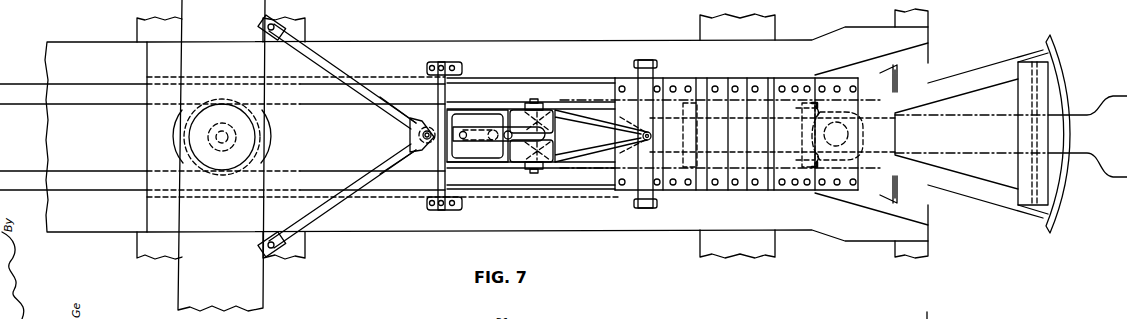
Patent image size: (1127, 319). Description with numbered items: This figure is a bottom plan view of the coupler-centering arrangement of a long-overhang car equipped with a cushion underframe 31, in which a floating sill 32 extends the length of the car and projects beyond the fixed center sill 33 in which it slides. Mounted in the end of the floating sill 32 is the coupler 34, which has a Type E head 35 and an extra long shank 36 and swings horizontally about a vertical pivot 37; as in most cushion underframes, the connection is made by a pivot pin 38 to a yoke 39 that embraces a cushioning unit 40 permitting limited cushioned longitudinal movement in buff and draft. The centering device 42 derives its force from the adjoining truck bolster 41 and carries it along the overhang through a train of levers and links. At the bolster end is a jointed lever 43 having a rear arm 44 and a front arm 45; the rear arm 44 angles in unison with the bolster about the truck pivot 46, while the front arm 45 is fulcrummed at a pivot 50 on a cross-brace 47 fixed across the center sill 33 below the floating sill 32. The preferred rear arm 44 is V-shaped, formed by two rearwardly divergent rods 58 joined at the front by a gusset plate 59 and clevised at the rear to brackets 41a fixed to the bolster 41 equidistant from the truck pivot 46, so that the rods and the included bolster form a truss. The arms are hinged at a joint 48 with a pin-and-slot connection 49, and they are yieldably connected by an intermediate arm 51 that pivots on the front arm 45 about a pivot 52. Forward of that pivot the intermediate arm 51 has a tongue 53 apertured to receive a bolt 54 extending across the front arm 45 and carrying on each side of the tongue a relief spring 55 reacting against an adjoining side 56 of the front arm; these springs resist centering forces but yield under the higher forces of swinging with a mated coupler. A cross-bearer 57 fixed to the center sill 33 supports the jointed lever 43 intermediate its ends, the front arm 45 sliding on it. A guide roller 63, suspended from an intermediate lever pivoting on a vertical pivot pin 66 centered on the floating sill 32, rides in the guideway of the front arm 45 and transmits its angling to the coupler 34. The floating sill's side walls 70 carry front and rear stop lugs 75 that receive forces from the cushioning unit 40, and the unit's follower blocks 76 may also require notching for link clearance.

The cushion underframe 31 is at (505, 40).
The floating sill 32 is at (15, 84).
The fixed center sill 33 is at (95, 42).
The coupler 34 is at (1081, 112).
The Type E head 35 is at (1117, 96).
The shank 36 is at (972, 142).
The vertical pivot 37 is at (831, 137).
The pivot pin 38 is at (847, 138).
The yoke 39 is at (795, 119).
The cushioning unit 40 is at (734, 112).
The truck bolster 41 is at (233, 155).
The brackets 41a is at (268, 36).
The centering device 42 is at (406, 142).
The jointed lever 43 is at (378, 170).
The rear arm 44 is at (380, 104).
The front arm 45 is at (572, 162).
The truck pivot 46 is at (216, 137).
The cross-brace 47 is at (655, 74).
The joint 48 is at (427, 141).
The pin-and-slot connection 49 is at (427, 129).
The pivot 50 is at (642, 136).
The intermediate arm 51 is at (457, 130).
The pivot 52 is at (505, 140).
The tongue 53 is at (546, 136).
The bolt 54 is at (532, 102).
The relief spring 55 is at (552, 121).
The side 56 is at (483, 108).
The cross-bearer 57 is at (447, 93).
The rods 58 is at (336, 66).
The gusset plate 59 is at (409, 131).
The guide roller 63 is at (492, 130).
The vertical pivot pin 66 is at (464, 140).
The side walls 70 is at (77, 104).
The stop lugs 75 is at (677, 165).
The follower blocks 76 is at (686, 136).